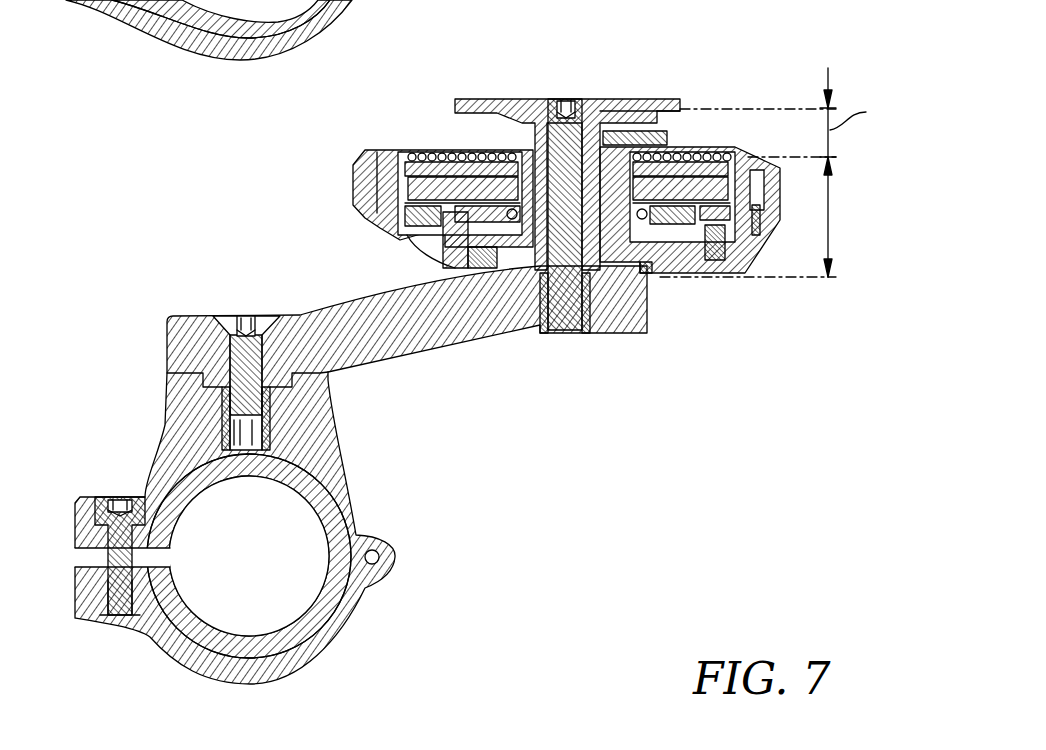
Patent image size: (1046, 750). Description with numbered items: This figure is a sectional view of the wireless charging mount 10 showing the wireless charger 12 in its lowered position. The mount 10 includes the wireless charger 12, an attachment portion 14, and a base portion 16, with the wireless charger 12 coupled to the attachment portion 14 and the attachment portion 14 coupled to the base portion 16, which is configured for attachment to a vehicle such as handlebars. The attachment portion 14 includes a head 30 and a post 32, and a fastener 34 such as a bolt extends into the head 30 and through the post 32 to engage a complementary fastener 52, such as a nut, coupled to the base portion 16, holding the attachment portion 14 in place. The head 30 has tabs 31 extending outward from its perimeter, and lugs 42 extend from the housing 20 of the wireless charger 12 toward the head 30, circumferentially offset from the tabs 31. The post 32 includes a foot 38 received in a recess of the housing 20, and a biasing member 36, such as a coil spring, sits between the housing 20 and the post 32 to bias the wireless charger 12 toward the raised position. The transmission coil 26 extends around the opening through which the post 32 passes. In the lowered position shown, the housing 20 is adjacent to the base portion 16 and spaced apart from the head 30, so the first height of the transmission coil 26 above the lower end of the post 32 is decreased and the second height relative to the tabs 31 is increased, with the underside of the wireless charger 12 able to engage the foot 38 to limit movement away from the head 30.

The wireless charging mount 10 is at (187, 227).
The wireless charger 12 is at (338, 182).
The attachment portion 14 is at (473, 92).
The base portion 16 is at (215, 297).
The housing 20 is at (353, 156).
The transmission coil 26 is at (436, 153).
The head 30 is at (610, 92).
The tabs 31 is at (664, 96).
The post 32 is at (598, 280).
The fastener 34 is at (564, 96).
The biasing member 36 is at (494, 238).
The foot 38 is at (668, 280).
The lugs 42 is at (672, 134).
The complementary fastener 52 is at (585, 340).